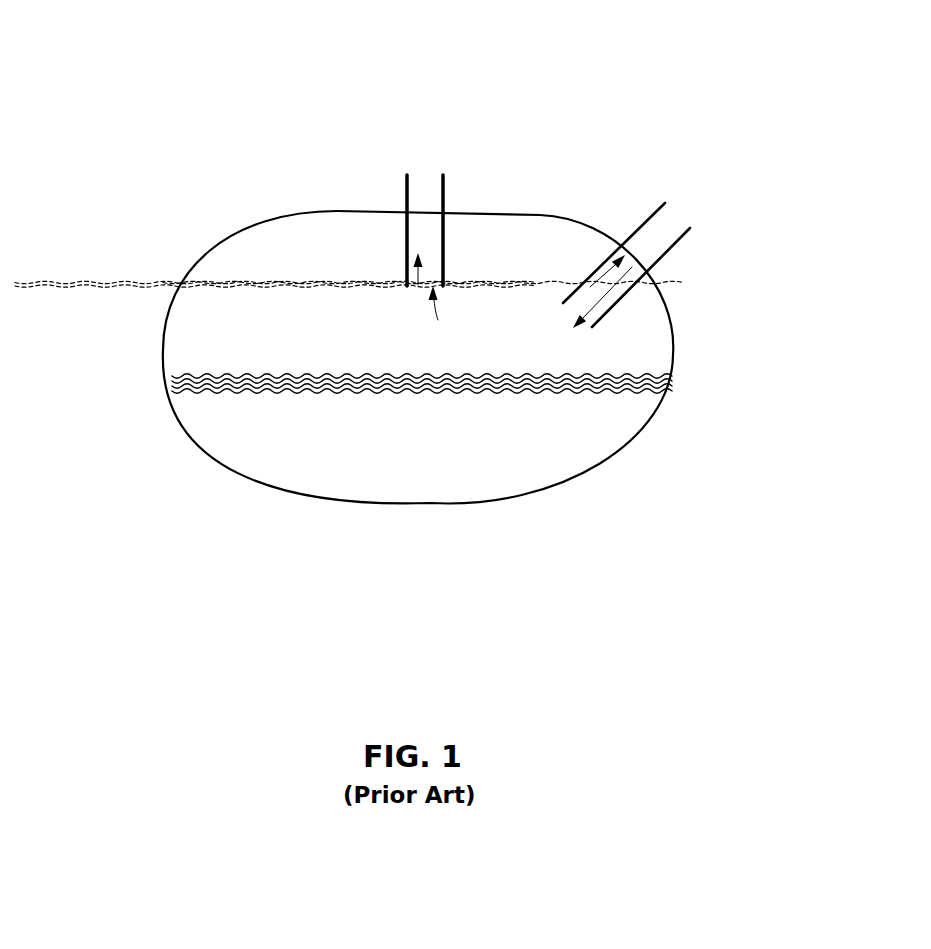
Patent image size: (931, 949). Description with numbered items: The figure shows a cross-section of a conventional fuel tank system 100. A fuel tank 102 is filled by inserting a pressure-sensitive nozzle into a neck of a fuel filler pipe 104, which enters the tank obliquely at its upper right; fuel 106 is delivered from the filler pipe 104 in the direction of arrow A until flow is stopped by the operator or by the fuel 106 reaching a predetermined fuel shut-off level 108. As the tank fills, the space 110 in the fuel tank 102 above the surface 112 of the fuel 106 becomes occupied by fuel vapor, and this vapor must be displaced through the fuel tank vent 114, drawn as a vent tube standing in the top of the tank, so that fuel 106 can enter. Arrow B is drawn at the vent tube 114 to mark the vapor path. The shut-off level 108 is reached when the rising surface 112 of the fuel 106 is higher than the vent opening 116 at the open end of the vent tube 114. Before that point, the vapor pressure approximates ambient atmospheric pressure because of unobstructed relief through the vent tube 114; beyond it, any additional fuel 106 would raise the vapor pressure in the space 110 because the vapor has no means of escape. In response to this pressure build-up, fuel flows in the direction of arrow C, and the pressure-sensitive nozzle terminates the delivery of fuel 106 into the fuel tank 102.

The fuel tank system 100 is at (123, 73).
The fuel tank 102 is at (675, 356).
The fuel filler pipe 104 is at (648, 217).
The fuel 106 is at (620, 427).
The fuel shut-off level 108 is at (770, 283).
The space 110 is at (552, 350).
The surface of fuel 112 is at (372, 364).
The fuel tank vent 114 is at (407, 201).
The vent opening 116 is at (438, 320).
The arrow A is at (612, 287).
The arrow B is at (418, 254).
The arrow C is at (602, 275).